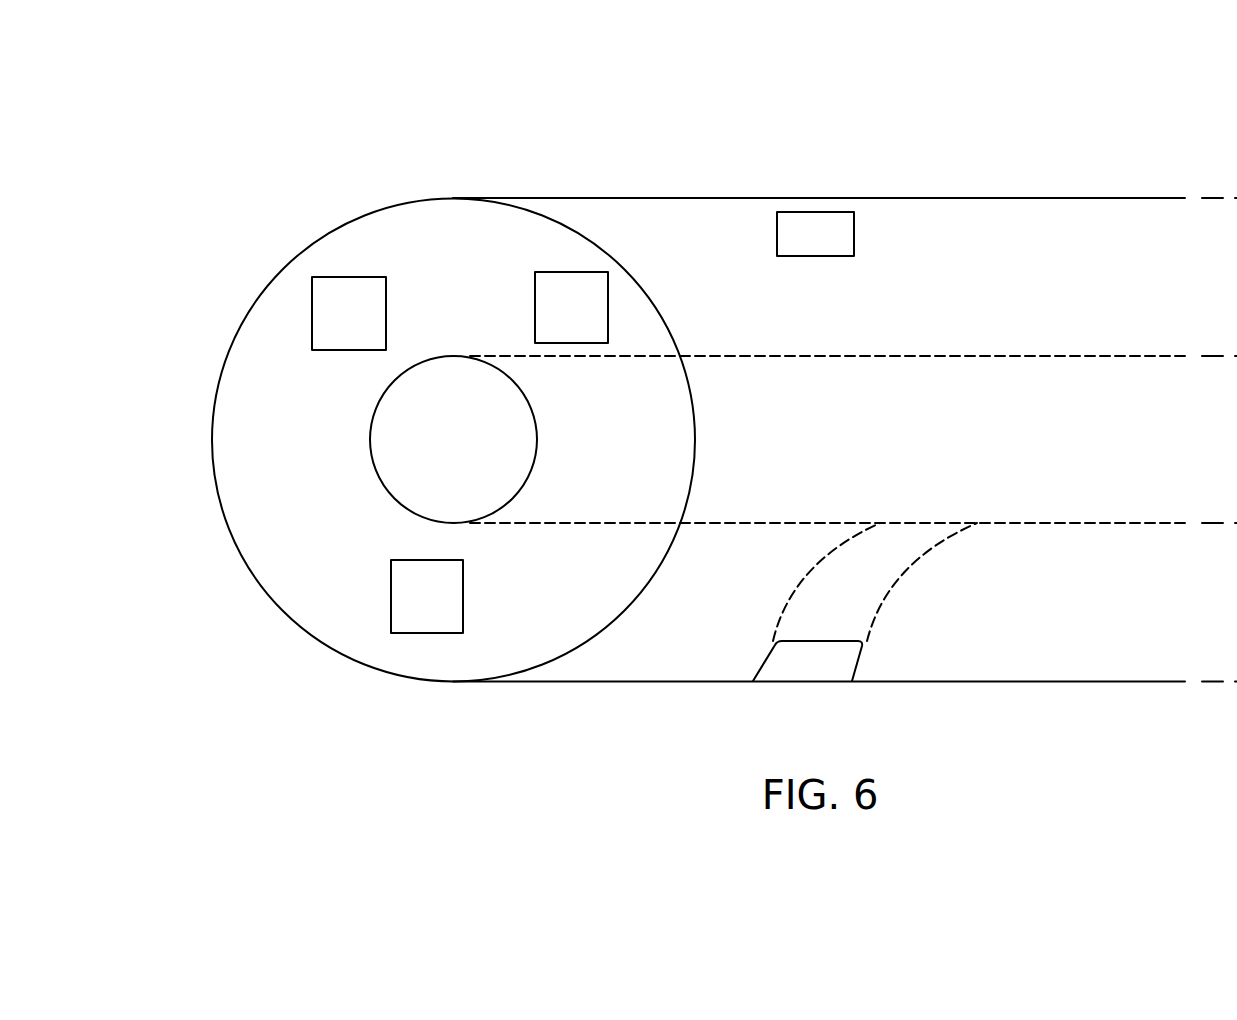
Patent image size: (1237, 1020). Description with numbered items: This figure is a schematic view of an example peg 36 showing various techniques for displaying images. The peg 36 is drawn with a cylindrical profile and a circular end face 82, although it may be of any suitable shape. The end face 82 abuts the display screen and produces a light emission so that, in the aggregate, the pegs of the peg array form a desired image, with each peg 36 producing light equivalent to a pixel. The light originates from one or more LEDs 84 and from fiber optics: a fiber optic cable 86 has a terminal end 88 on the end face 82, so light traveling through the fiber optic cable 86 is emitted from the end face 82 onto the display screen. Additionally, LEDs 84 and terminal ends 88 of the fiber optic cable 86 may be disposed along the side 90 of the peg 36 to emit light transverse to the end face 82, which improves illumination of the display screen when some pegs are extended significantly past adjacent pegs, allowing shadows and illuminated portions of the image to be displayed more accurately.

The peg 36 is at (284, 153).
The end face 82 is at (259, 514).
The LEDs 84 is at (312, 330).
The fiber optic cable 86 is at (1003, 356).
The terminal end 88 is at (430, 465).
The side 90 is at (911, 684).